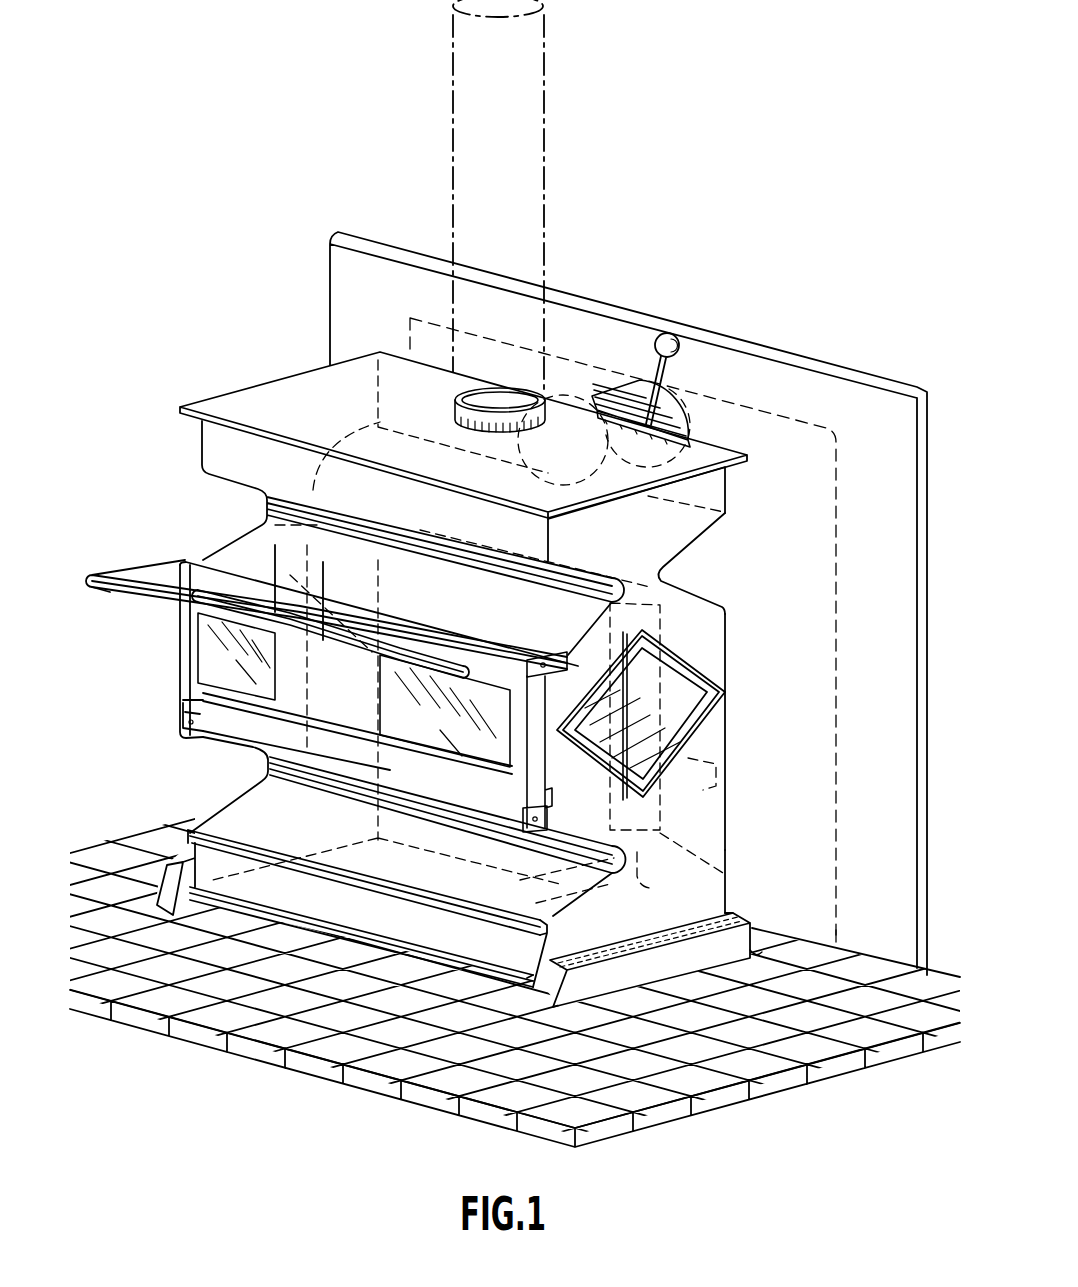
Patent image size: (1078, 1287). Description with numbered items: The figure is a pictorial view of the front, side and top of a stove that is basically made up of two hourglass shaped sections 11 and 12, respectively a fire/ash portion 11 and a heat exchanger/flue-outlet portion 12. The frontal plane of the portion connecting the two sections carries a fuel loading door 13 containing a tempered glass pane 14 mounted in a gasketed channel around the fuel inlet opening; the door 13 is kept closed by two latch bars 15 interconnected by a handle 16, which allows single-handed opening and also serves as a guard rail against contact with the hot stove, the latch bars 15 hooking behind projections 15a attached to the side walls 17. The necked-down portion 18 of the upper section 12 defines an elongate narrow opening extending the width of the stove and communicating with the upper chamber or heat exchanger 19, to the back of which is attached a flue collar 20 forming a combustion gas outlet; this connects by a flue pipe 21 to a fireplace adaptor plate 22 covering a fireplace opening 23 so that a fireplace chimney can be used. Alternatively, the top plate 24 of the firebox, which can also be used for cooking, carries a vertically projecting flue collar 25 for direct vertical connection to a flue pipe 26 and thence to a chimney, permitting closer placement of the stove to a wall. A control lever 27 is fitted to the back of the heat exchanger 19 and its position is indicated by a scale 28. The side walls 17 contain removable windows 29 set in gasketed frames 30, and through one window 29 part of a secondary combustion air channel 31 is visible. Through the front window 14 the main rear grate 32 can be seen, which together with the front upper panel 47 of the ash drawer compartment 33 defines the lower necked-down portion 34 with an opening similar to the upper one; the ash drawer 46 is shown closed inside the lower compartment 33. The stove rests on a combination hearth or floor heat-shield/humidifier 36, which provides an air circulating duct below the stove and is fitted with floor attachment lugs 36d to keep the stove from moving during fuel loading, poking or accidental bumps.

The fire/ash portion 11 is at (232, 768).
The heat exchanger/flue-outlet portion 12 is at (236, 505).
The fuel loading door 13 is at (178, 683).
The glass pane 14 is at (200, 700).
The latch bars 15 is at (150, 568).
The projections 15a is at (580, 652).
The handle 16 is at (130, 597).
The side walls 17 is at (727, 628).
The necked-down portion 18 is at (667, 575).
The heat exchanger 19 is at (729, 505).
The back flue collar 20 is at (460, 442).
The flue pipe 21 is at (586, 390).
The fireplace adaptor plate 22 is at (745, 342).
The fireplace opening 23 is at (776, 410).
The top plate 24 is at (746, 456).
The vertically projecting flue collar 25 is at (508, 364).
The flue pipe 26 is at (548, 234).
The control lever 27 is at (682, 350).
The scale 28 is at (648, 428).
The windows 29 is at (235, 630).
The gasketed frames 30 is at (702, 680).
The secondary combustion air channels 31 is at (665, 734).
The main rear grate 32 is at (720, 798).
The ash drawer compartment 33 is at (733, 889).
The necked-down portion 34 is at (652, 888).
The floor heat-shield/humidifier 36 is at (760, 924).
The floor attachment lugs 36d is at (830, 938).
The ash drawer 46 is at (186, 840).
The front upper panel 47 is at (555, 912).